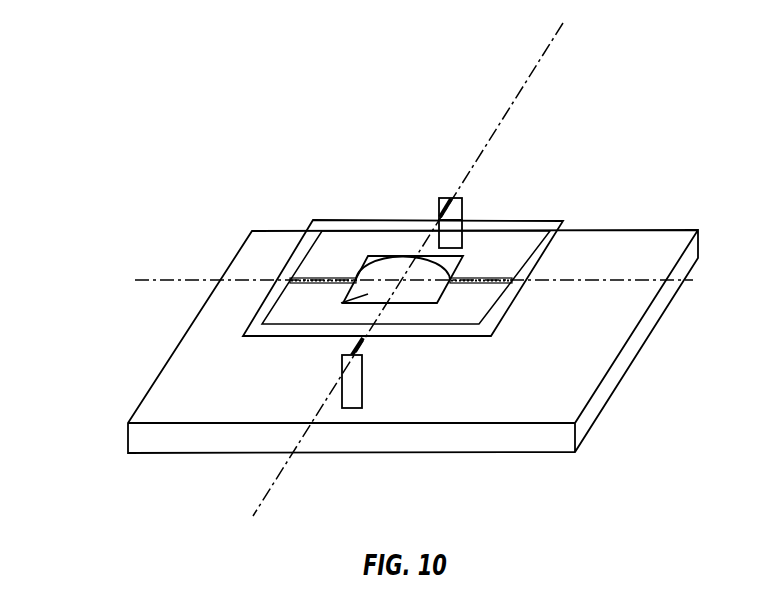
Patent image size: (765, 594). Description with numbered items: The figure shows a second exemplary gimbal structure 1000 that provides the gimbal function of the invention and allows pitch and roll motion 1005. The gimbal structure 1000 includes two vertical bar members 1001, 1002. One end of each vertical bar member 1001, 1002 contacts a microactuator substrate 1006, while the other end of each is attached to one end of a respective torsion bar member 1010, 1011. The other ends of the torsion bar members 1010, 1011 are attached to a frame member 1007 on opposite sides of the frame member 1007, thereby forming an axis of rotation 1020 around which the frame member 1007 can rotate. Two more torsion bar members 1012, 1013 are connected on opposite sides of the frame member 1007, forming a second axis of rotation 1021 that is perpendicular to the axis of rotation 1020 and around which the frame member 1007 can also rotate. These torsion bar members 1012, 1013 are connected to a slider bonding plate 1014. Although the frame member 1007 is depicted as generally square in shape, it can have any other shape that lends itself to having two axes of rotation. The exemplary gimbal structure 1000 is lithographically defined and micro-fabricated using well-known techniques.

The gimbal structure 1000 is at (146, 183).
The vertical bar member 1001 is at (353, 388).
The vertical bar member 1002 is at (460, 198).
The pitch and roll motion 1005 is at (400, 257).
The microactuator substrate 1006 is at (562, 400).
The frame member 1007 is at (440, 337).
The torsion bar member 1010 is at (362, 346).
The torsion bar member 1011 is at (462, 208).
The torsion bar member 1012 is at (473, 283).
The torsion bar member 1013 is at (318, 278).
The slider bonding plate 1014 is at (363, 296).
The axis of rotation 1020 is at (497, 128).
The second axis of rotation 1021 is at (171, 280).